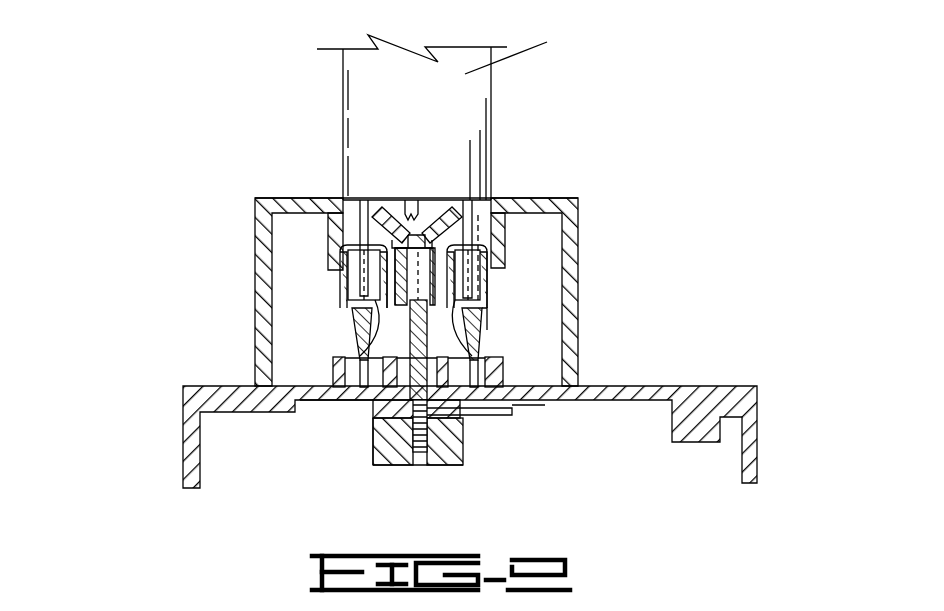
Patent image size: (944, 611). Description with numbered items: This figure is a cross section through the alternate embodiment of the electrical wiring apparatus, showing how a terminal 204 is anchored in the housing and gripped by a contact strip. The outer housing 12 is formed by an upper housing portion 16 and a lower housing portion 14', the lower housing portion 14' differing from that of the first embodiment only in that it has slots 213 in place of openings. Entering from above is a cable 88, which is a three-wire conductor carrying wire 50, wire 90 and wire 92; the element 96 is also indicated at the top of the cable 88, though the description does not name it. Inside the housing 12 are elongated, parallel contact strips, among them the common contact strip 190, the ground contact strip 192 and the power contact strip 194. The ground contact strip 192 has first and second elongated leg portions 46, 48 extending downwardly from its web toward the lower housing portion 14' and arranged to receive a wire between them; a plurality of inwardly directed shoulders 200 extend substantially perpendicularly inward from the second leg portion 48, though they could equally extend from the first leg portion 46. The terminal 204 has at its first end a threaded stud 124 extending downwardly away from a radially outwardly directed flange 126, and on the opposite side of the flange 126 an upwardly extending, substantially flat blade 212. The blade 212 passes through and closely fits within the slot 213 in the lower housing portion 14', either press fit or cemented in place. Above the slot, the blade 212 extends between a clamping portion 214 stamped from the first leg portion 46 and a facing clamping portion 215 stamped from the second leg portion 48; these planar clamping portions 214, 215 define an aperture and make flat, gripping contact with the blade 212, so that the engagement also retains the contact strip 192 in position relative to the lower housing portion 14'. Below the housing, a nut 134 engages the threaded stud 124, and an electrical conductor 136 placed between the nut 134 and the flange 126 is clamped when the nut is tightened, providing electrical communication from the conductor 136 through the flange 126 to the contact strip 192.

The outer housing 12 is at (584, 205).
The upper housing portion 16 is at (570, 197).
The cable 88 is at (493, 92).
The cable 96 is at (521, 51).
The wire 92 is at (363, 208).
The wire 90 is at (412, 203).
The wire 50 is at (478, 205).
The inwardly directed shoulders 200 is at (390, 262).
The first leg portion 46 is at (352, 298).
The clamping portion 215 is at (428, 338).
The ground contact strip 192 is at (350, 318).
The power contact strip 194 is at (480, 304).
The second leg portion 48 is at (470, 292).
The common contact strip 190 is at (356, 343).
The lower housing portion 14' is at (486, 410).
The blade 212 is at (435, 342).
The clamping portion 214 is at (410, 345).
The threaded stud 124 is at (440, 458).
The terminal 204 is at (418, 452).
The nut 134 is at (390, 465).
The slot 213 is at (375, 435).
The electrical conductor 136 is at (492, 418).
The flange 126 is at (512, 405).